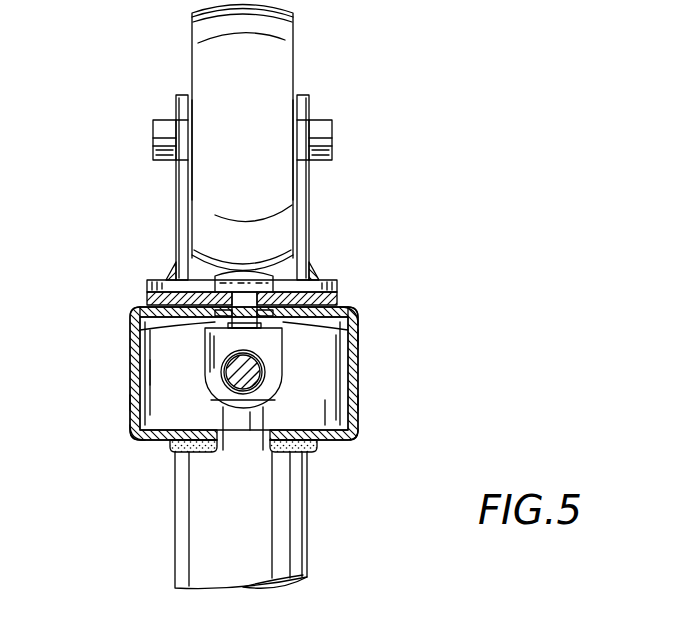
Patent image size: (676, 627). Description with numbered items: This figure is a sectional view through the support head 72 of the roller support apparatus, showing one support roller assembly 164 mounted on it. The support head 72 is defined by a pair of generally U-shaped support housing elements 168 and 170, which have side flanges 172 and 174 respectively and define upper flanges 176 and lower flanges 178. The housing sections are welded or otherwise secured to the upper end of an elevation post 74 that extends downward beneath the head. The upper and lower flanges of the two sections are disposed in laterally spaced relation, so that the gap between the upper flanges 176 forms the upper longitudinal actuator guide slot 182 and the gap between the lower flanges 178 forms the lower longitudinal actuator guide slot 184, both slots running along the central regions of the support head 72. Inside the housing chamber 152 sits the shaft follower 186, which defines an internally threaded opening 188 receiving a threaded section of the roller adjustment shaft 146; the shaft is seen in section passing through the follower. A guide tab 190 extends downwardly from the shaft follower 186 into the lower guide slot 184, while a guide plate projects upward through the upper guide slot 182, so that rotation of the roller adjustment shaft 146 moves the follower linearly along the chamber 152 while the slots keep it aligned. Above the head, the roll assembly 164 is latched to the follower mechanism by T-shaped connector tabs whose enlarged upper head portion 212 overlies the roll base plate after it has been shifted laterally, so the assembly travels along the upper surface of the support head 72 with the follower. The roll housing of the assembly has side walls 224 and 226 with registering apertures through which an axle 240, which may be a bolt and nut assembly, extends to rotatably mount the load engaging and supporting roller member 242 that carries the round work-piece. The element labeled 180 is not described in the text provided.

The support roller assembly 164 is at (337, 36).
The roller member 242 is at (198, 43).
The axle 240 is at (333, 143).
The side wall 226 is at (177, 198).
The side wall 224 is at (308, 205).
The enlarged upper head portion 212 is at (272, 278).
The upper longitudinal actuator guide slot 182 is at (133, 310).
The upper flange 176 is at (355, 312).
The support housing element 168 is at (130, 341).
The support housing element 170 is at (358, 337).
The shaft follower 186 is at (150, 372).
The roller adjustment shaft 146 is at (250, 375).
The side flange 172 is at (131, 400).
The side flange 174 is at (358, 400).
The internally threaded opening 188 is at (230, 393).
The housing chamber 152 is at (330, 415).
The support head 72 is at (140, 440).
The lower flange 178 is at (352, 440).
The lower longitudinal actuator guide slot 184 is at (205, 447).
The right pad 180 is at (318, 450).
The guide tab 190 is at (250, 430).
The elevation post 74 is at (290, 537).